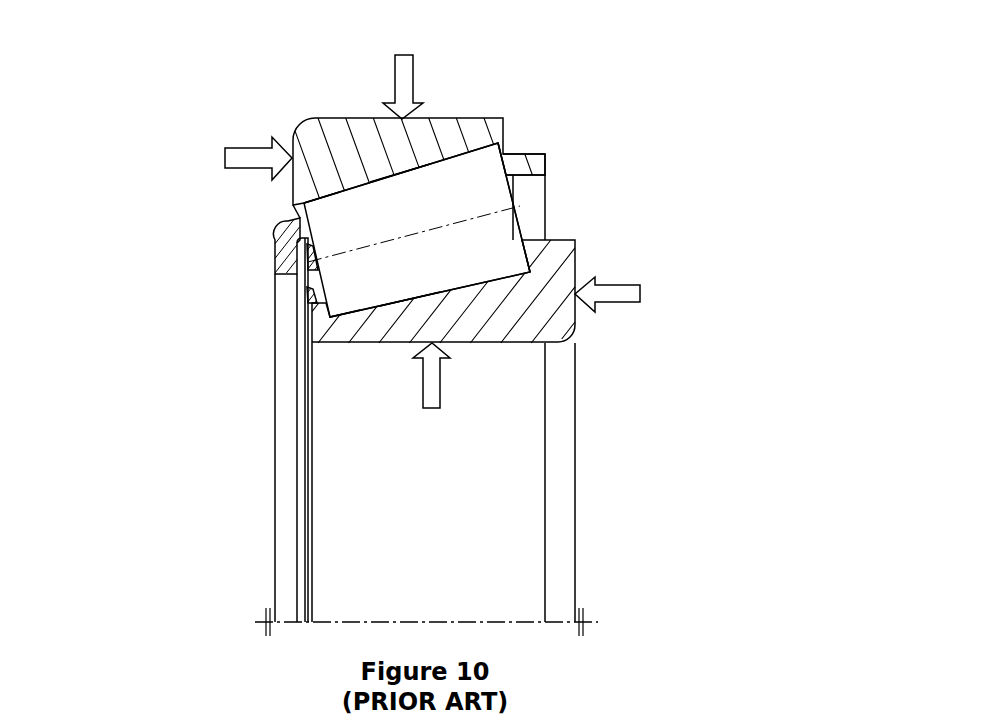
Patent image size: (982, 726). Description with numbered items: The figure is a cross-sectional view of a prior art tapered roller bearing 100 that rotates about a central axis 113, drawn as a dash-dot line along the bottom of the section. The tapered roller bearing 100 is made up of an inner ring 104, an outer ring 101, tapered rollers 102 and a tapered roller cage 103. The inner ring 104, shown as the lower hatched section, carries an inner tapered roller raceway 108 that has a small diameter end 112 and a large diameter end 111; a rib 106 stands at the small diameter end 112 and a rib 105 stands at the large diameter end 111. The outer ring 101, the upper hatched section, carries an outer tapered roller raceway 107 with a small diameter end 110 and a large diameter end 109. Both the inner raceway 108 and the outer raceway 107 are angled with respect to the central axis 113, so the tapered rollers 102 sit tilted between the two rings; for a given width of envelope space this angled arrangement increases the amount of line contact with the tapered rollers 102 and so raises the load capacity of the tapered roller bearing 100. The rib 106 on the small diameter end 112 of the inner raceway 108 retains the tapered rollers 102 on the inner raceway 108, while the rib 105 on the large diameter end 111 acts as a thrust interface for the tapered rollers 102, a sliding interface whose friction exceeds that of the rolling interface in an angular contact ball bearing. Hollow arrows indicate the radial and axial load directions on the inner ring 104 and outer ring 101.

The tapered roller bearing 100 is at (630, 128).
The outer ring 101 is at (302, 185).
The tapered rollers 102 is at (490, 193).
The tapered roller cage 103 is at (285, 260).
The inner ring 104 is at (550, 330).
The rib 105 is at (527, 253).
The rib 106 is at (327, 316).
The outer tapered roller raceway 107 is at (397, 173).
The inner tapered roller raceway 108 is at (407, 287).
The large diameter end 109 is at (488, 143).
The small diameter end 110 is at (313, 202).
The large diameter end 111 is at (493, 140).
The small diameter end 112 is at (348, 320).
The central axis 113 is at (460, 622).